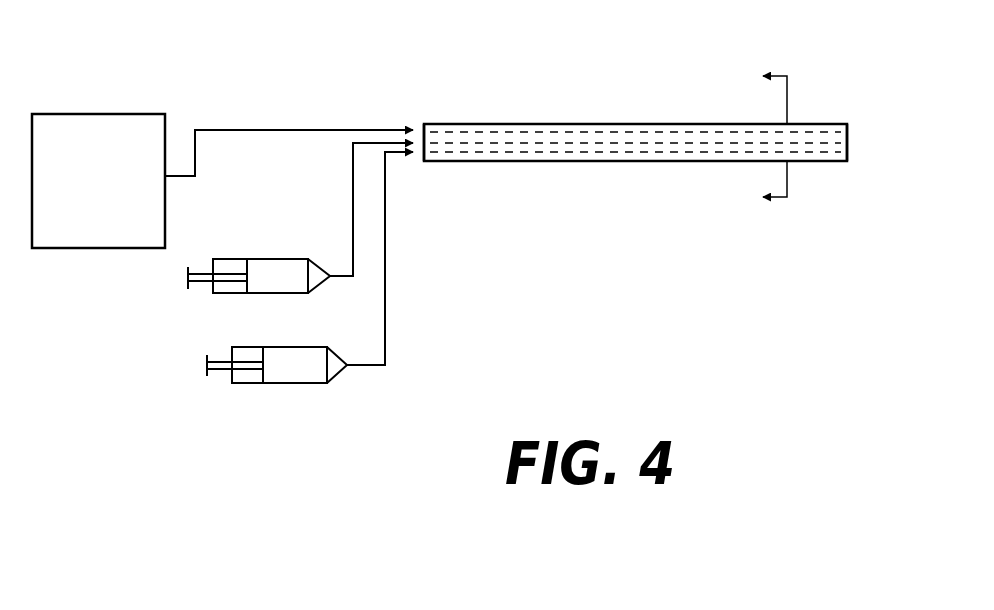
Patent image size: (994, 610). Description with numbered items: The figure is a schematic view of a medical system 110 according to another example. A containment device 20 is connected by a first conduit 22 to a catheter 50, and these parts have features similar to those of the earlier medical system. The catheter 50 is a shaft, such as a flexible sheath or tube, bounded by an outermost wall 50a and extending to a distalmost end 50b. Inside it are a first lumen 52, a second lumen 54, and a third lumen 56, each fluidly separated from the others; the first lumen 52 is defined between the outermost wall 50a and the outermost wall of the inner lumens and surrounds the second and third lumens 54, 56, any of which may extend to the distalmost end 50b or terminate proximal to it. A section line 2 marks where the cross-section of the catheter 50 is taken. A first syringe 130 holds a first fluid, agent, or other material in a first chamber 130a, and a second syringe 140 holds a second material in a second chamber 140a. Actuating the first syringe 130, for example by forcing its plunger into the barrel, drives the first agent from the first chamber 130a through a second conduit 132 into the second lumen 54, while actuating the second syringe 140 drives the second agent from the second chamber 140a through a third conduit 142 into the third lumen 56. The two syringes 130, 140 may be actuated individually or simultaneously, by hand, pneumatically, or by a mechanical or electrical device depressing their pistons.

The medical system 110 is at (406, 31).
The containment device 20 is at (88, 193).
The first conduit 22 is at (264, 128).
The catheter 50 is at (673, 138).
The outermost wall of catheter 50a is at (416, 168).
The distalmost end of catheter 50b is at (859, 159).
The first lumen 52 is at (628, 162).
The second lumen 54 is at (838, 134).
The third lumen 56 is at (806, 148).
The line 2- 2 is at (775, 138).
The first syringe 130 is at (289, 250).
The first chamber 130a is at (301, 291).
The second conduit 132 is at (352, 160).
The second syringe 140 is at (293, 390).
The second chamber 140a is at (340, 374).
The third conduit 142 is at (387, 272).